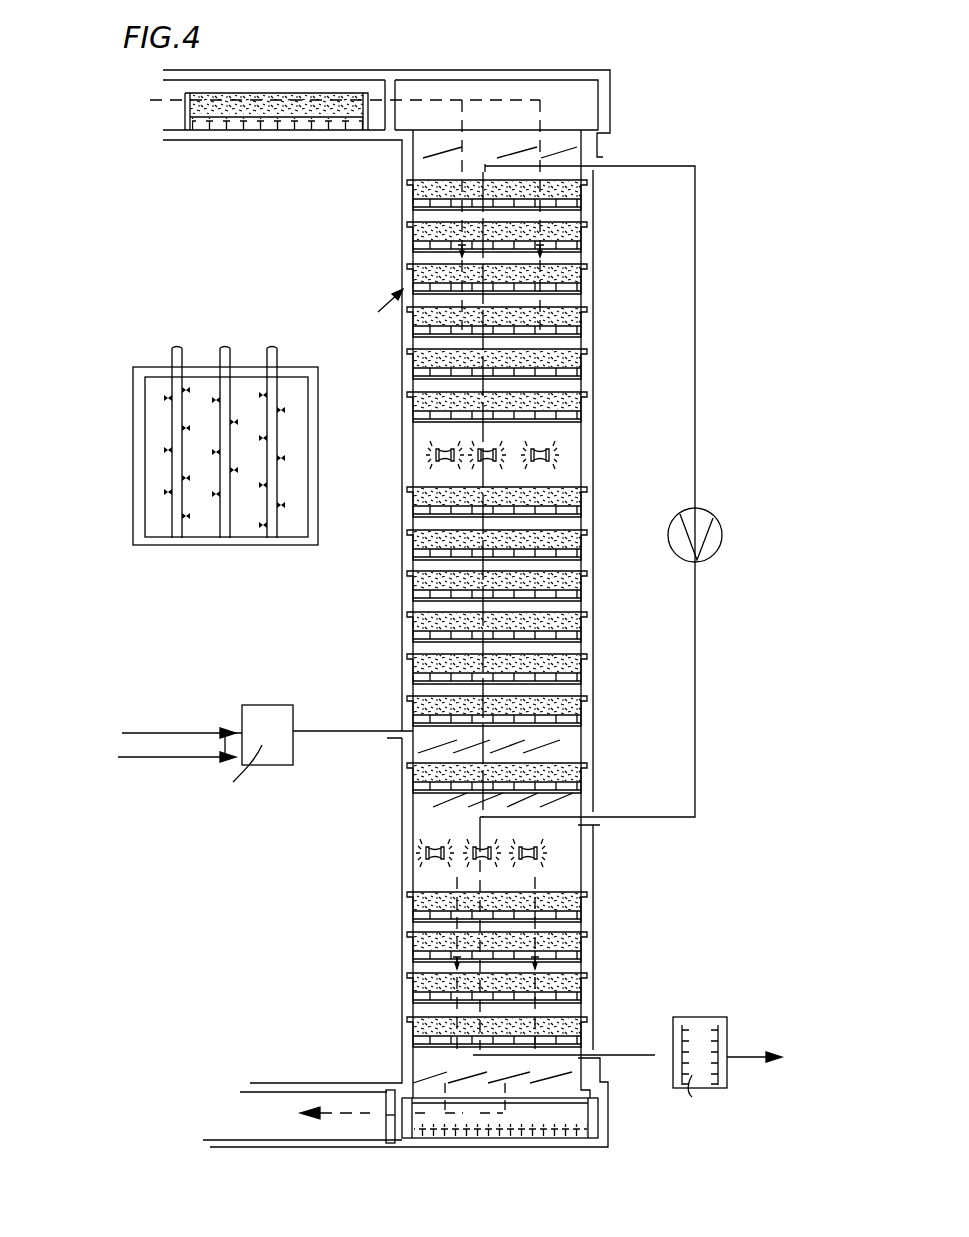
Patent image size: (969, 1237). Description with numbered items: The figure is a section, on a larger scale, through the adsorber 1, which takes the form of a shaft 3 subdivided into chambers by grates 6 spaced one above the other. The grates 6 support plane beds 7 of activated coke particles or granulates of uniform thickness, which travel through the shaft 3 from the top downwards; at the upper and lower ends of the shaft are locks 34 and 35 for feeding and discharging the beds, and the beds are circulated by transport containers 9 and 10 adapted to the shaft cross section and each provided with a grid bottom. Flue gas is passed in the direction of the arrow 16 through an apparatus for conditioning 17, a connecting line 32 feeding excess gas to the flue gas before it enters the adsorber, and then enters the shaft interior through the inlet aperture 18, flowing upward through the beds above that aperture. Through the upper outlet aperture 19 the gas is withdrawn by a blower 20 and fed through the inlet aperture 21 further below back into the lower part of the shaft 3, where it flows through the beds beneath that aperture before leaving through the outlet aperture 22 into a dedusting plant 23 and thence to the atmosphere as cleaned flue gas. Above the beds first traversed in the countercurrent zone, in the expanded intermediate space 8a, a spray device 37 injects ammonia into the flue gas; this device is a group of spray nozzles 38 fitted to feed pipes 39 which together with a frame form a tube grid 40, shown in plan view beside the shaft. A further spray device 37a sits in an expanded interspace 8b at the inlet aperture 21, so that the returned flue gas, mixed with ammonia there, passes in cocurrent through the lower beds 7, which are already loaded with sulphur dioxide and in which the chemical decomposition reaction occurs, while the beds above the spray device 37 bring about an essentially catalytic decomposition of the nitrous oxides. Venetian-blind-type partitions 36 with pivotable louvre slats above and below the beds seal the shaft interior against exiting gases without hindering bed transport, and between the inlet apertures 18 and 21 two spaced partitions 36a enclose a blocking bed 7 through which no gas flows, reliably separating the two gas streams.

The adsorber 1 is at (383, 309).
The shaft 3 is at (405, 200).
The grates 6 is at (568, 208).
The beds 7 is at (575, 200).
The expanded intermediate space 8a is at (555, 475).
The expanded interspace 8b is at (423, 833).
The transport container 9 is at (516, 1125).
The transport container 10 is at (330, 100).
The arrow 16 is at (170, 733).
The apparatus for conditioning 17 is at (282, 710).
The inlet aperture 18 is at (380, 740).
The upper outlet aperture 19 is at (600, 162).
The blower 20 is at (712, 528).
The inlet aperture 21 is at (600, 825).
The outlet aperture 22 is at (600, 1055).
The dedusting plant 23 is at (708, 1028).
The connecting line 32 is at (170, 757).
The gate or lock 34 is at (590, 95).
The gate or lock 35 is at (590, 1115).
The partitions 36 is at (520, 155).
The partitions 36a is at (545, 750).
The spray device 37 is at (548, 445).
The spray device 37a is at (460, 862).
The spray nozzles 38 is at (170, 395).
The feed pipes 39 is at (182, 358).
The tube grid 40 is at (137, 495).